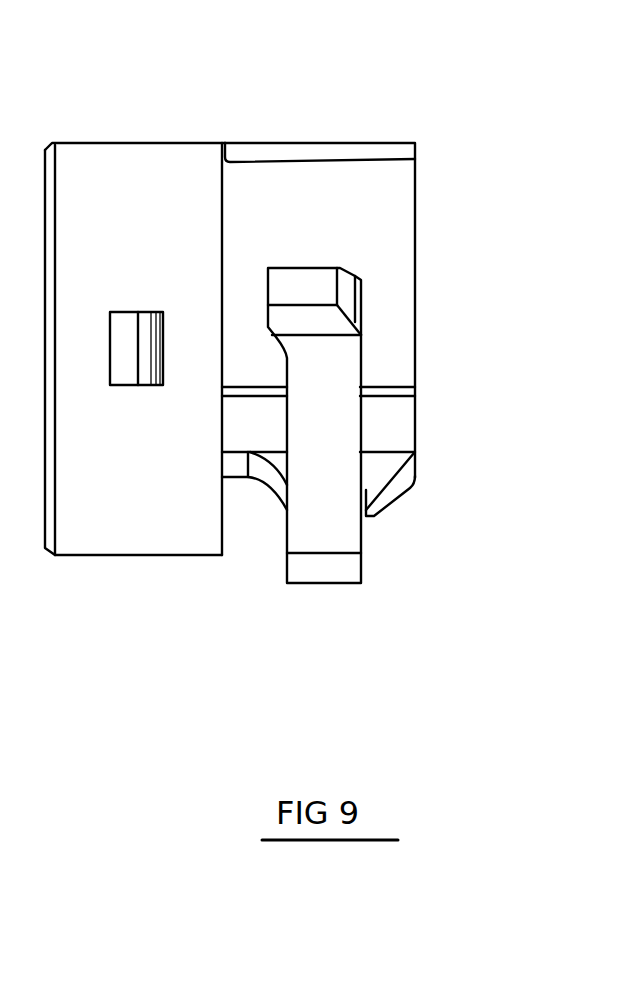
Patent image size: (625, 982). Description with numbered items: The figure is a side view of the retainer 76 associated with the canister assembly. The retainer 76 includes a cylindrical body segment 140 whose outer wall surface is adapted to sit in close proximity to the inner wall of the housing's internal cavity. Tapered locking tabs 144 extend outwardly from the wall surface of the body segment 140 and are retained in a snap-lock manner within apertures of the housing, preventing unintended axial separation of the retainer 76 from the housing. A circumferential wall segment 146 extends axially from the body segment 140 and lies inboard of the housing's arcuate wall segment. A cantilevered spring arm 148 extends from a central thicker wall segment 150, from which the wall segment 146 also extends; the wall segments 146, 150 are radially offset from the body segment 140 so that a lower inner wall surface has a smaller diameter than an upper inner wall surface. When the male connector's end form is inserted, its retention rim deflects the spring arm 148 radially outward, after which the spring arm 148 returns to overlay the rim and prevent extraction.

The retainer 76 is at (148, 120).
The cylindrical body segment 140 is at (108, 535).
The tapered locking tabs 144 is at (146, 322).
The circumferential wall segment 146 is at (398, 198).
The cantilevered spring arm 148 is at (332, 370).
The central thicker wall segment 150 is at (403, 437).